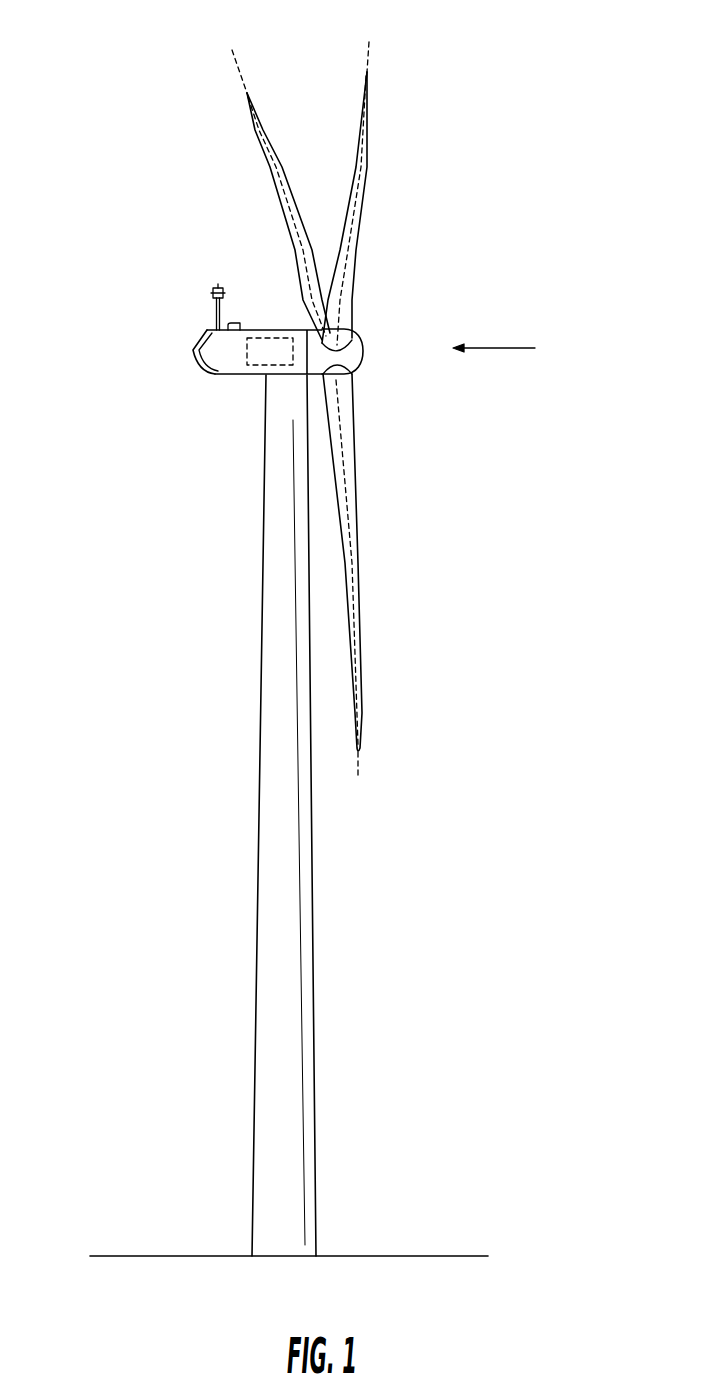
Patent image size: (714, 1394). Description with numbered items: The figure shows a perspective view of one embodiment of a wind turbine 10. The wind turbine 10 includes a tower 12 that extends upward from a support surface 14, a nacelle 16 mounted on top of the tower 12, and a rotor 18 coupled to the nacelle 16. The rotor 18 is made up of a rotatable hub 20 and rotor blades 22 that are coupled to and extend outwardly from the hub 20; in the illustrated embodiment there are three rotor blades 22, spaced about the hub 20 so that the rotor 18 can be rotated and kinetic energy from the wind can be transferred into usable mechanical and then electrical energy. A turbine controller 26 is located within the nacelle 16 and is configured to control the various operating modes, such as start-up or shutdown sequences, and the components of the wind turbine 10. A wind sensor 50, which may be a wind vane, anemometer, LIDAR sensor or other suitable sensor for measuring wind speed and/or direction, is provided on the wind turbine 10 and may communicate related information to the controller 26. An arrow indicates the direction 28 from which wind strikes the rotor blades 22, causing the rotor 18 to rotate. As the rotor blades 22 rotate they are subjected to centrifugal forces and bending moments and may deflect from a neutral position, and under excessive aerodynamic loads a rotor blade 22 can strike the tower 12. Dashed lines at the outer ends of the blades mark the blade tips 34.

The wind turbine 10 is at (488, 193).
The tower 12 is at (288, 933).
The support surface 14 is at (172, 1256).
The nacelle 16 is at (232, 376).
The rotor 18 is at (368, 328).
The rotatable hub 20 is at (362, 355).
The rotor blade 22 is at (282, 168).
The turbine controller 26 is at (267, 330).
The direction 28 is at (497, 348).
The blade tip 34 is at (238, 70).
The wind sensor 50 is at (217, 313).